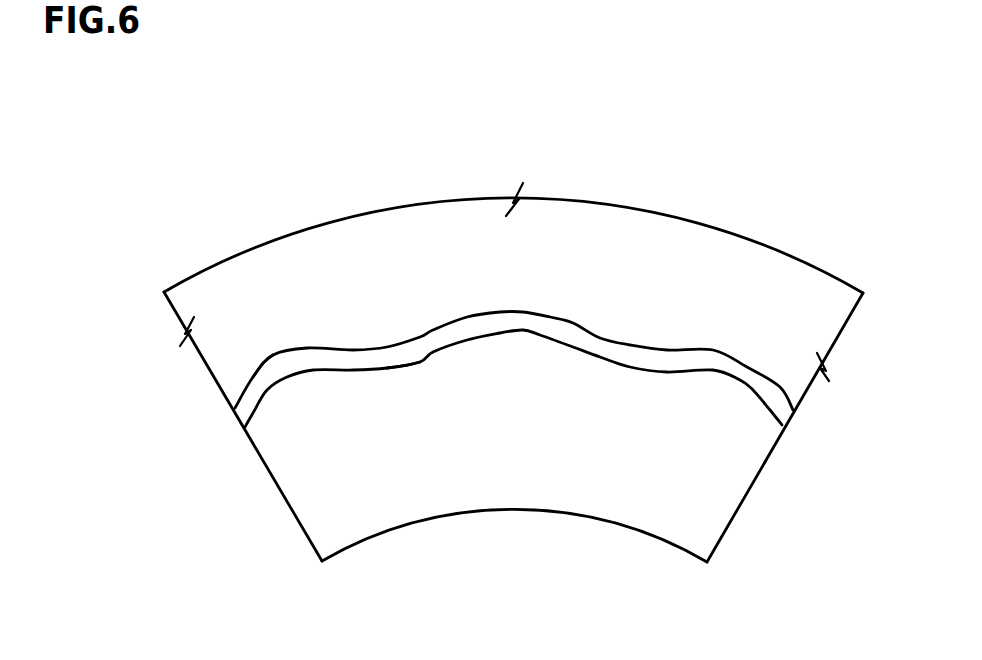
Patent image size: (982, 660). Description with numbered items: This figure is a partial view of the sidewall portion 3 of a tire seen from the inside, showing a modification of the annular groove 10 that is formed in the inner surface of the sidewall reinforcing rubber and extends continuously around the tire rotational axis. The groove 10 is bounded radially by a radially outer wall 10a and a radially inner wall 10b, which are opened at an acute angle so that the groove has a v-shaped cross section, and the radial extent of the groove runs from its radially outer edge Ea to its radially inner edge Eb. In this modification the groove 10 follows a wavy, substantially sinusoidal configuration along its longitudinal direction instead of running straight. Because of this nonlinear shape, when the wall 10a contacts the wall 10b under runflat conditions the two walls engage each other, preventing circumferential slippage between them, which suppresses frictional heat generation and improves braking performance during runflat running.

The sidewall portion 3 is at (510, 158).
The annular groove 10 is at (444, 353).
The radially outer wall 10a is at (523, 312).
The radially inner wall 10b is at (343, 388).
The radially outer edge Ea is at (262, 368).
The radially inner edge Eb is at (405, 370).